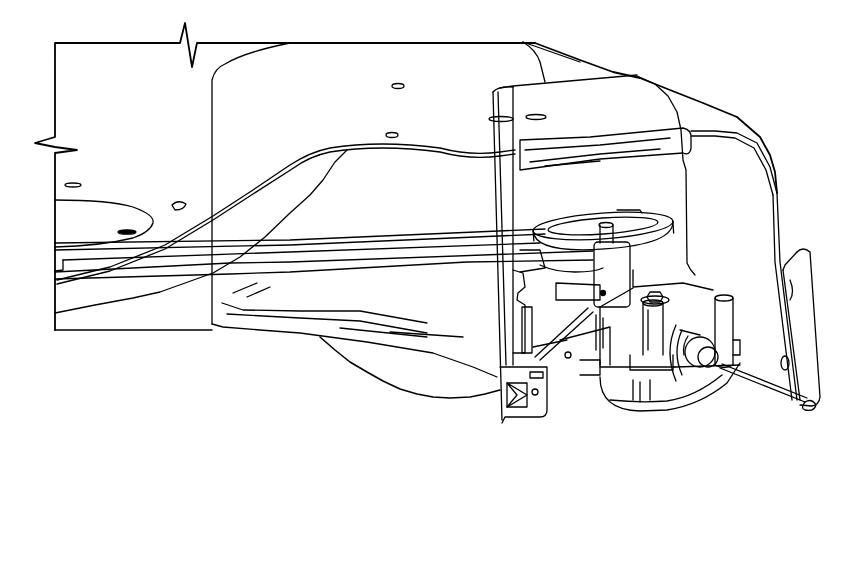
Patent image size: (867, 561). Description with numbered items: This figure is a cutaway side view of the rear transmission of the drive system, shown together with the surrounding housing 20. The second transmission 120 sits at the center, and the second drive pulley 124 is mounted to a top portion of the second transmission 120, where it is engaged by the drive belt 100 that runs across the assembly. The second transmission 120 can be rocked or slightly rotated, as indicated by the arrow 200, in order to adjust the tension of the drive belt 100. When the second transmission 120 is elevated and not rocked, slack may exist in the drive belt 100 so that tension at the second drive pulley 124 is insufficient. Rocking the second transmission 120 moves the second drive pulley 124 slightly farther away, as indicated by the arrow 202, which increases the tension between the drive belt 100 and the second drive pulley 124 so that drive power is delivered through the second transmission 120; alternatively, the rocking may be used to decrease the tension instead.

The mower deck 20 is at (723, 120).
The drive belt 100 is at (467, 262).
The second transmission 120 is at (627, 387).
The second drive pulley 124 is at (573, 222).
The arrow 200 is at (743, 328).
The arrow 202 is at (610, 187).